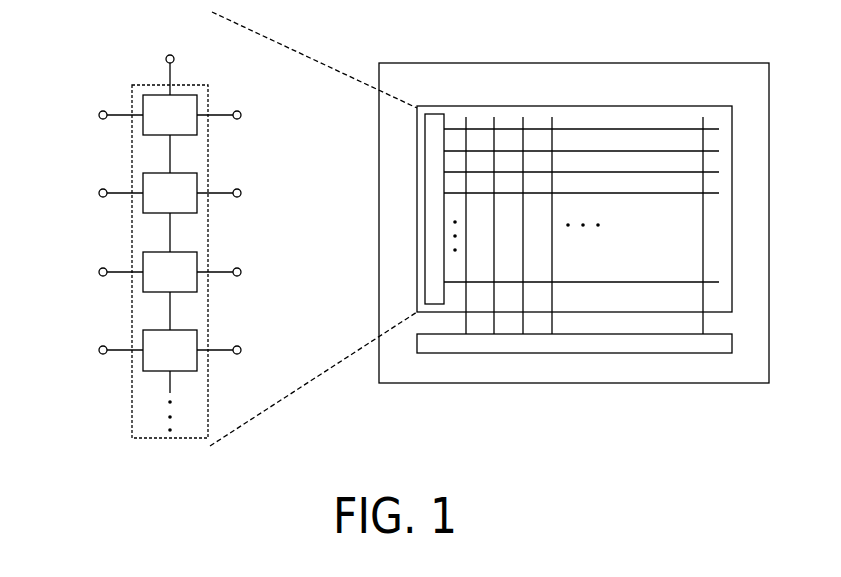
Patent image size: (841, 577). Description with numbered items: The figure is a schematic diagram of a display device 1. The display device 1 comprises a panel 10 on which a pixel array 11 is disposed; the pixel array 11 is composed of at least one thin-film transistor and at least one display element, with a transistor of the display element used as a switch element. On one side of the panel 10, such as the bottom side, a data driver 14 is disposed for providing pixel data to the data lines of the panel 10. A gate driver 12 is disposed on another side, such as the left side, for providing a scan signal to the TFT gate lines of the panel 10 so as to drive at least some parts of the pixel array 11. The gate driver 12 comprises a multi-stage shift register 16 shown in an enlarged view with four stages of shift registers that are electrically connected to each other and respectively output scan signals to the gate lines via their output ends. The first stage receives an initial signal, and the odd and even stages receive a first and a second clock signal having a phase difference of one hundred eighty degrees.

The display device 1 is at (769, 117).
The panel 10 is at (732, 255).
The pixel array 11 is at (698, 105).
The gate driver 12 is at (425, 208).
The data driver 14 is at (666, 354).
The multi-stage shift register 16 is at (170, 439).